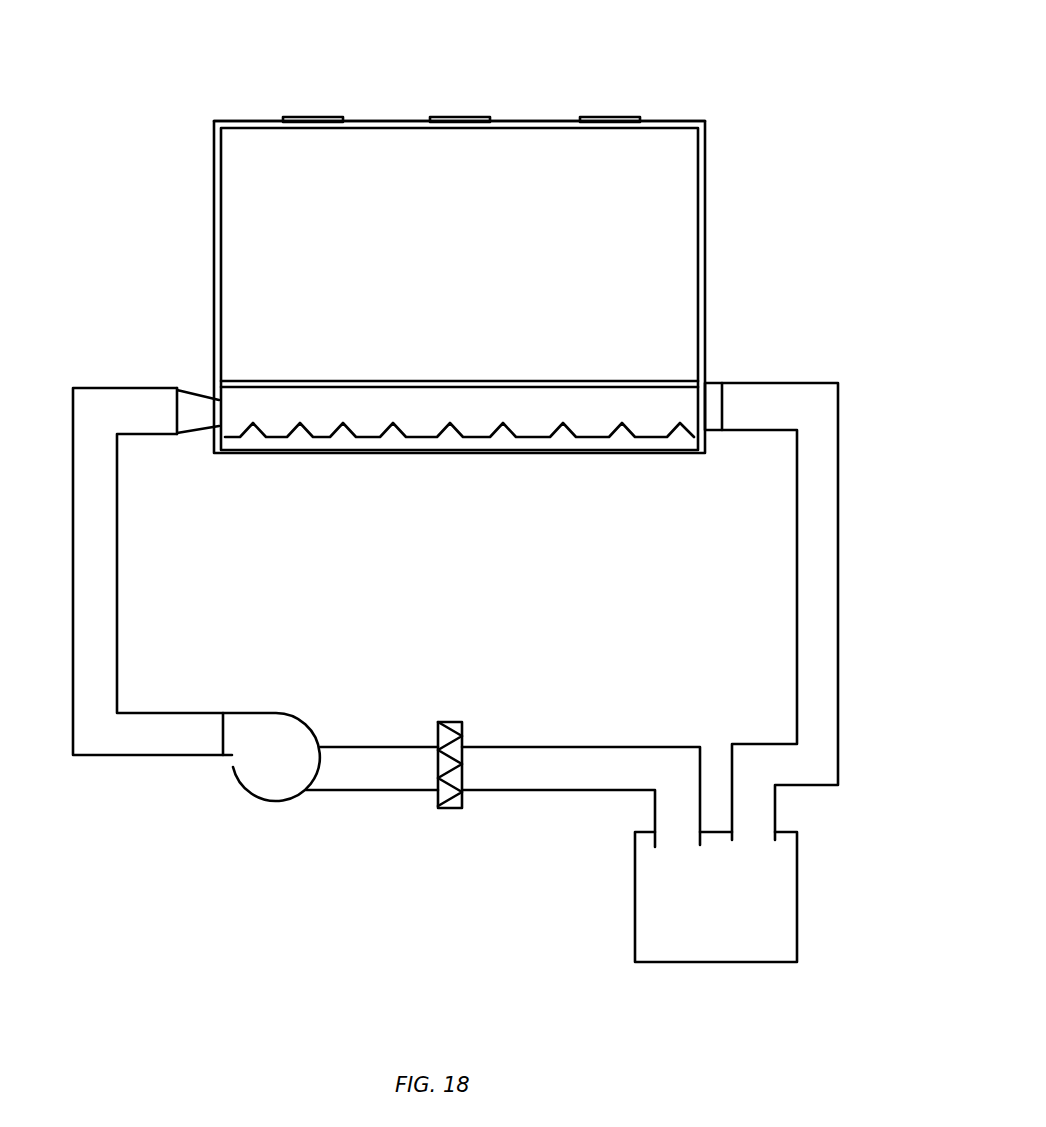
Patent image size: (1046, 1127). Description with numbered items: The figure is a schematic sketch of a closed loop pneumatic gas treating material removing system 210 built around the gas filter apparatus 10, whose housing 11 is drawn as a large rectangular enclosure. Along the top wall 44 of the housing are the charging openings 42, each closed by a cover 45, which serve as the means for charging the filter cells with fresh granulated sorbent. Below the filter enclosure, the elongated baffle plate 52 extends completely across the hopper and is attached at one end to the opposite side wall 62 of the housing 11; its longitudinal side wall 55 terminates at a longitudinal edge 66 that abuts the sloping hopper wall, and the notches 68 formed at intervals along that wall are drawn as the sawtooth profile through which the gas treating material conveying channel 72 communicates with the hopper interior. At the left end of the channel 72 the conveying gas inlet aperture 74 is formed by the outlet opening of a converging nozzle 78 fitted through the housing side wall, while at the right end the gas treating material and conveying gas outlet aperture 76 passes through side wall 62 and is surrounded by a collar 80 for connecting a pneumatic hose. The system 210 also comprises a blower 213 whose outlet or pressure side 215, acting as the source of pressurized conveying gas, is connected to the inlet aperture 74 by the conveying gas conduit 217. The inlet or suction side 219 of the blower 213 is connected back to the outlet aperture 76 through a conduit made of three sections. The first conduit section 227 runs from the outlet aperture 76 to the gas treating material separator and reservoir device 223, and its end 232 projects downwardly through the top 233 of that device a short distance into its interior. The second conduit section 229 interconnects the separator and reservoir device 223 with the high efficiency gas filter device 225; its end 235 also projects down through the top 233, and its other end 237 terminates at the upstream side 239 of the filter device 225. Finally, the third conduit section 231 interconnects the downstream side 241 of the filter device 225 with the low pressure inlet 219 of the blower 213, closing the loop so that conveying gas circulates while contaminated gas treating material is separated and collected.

The filter apparatus 10 is at (778, 82).
The housing 11 is at (782, 133).
The openings 42 is at (350, 128).
The top wall 44 is at (250, 122).
The cover 45 is at (313, 118).
The baffle plate 52 is at (490, 360).
The longitudinal side wall 55 is at (378, 407).
The side wall 62 is at (705, 212).
The longitudinal edge 66 is at (472, 432).
The notches 68 is at (348, 430).
The gas treating material conveying channel 72 is at (425, 447).
The conveying gas inlet aperture 74 is at (215, 406).
The gas treating material and conveying gas outlet aperture 76 is at (720, 396).
The converging nozzle 78 is at (194, 436).
The collar 80 is at (712, 385).
The closed loop pneumatic gas treating material removing system 210 is at (190, 796).
The blower 213 is at (274, 794).
The outlet or pressure side 215 is at (220, 722).
The conveying gas conduit 217 is at (114, 598).
The inlet or suction side 219 is at (322, 732).
The gas treating material separator and reservoir device 223 is at (728, 938).
The high efficiency gas filter device 225 is at (451, 809).
The first conduit section 227 is at (828, 500).
The second conduit section 229 is at (537, 794).
The third conduit section 231 is at (380, 793).
The end of first conduit section 232 is at (754, 838).
The top of separator and reservoir device 233 is at (781, 832).
The end of second conduit section 235 is at (665, 838).
The other end of second conduit section 237 is at (466, 746).
The upstream side 239 is at (464, 726).
The downstream side 241 is at (433, 740).